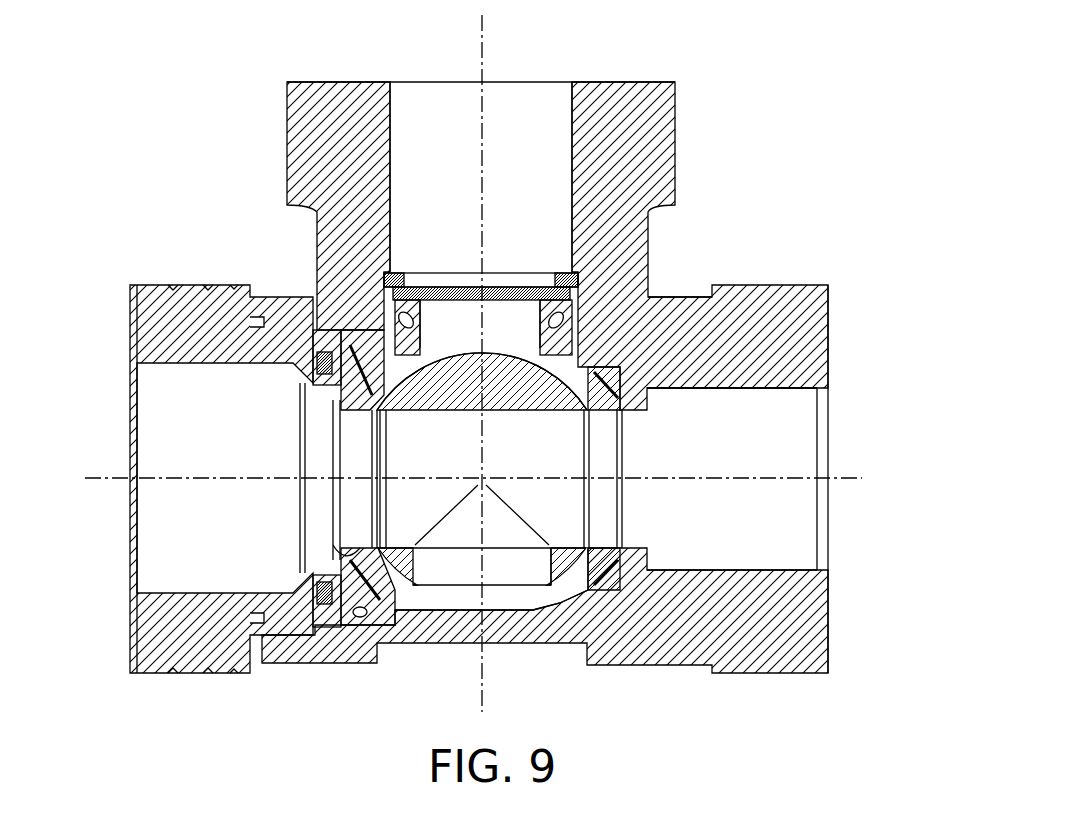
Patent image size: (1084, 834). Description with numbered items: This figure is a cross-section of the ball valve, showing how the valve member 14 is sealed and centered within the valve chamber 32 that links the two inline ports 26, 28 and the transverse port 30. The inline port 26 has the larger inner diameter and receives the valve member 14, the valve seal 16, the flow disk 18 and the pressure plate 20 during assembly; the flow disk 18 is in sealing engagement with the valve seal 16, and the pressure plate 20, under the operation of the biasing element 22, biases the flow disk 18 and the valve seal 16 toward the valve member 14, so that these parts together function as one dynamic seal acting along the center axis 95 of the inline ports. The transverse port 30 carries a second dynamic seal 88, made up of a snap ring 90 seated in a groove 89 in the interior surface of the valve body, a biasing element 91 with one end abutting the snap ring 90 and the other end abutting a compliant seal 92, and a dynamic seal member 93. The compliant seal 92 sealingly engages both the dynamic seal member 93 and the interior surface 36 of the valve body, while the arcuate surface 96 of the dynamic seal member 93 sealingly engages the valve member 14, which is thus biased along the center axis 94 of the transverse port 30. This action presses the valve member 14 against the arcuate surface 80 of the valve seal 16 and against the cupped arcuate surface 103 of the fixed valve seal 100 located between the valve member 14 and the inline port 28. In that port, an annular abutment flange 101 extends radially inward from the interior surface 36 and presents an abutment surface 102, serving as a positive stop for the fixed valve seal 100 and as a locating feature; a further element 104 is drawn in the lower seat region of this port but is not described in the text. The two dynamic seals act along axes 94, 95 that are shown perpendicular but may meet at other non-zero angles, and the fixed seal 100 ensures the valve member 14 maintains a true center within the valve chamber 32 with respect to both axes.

The valve member 14 is at (575, 592).
The valve seal 16 is at (400, 595).
The flow disk 18 is at (362, 620).
The pressure plate 20 is at (322, 330).
The biasing element 22 is at (300, 367).
The inline port 26 is at (175, 655).
The inline port 28 is at (818, 623).
The transverse port 30 is at (676, 130).
The valve chamber 32 is at (513, 606).
The interior surface 36 is at (805, 550).
The arcuate surface 80 is at (400, 540).
The dynamic seal 88 is at (372, 288).
The groove 89 is at (550, 300).
The snap ring 90 is at (584, 284).
The biasing element 91 is at (595, 292).
The compliant seal 92 is at (605, 298).
The dynamic seal member 93 is at (433, 320).
The center axis 94 is at (490, 44).
The center axis 95 is at (856, 468).
The arcuate surface 96 is at (428, 372).
The fixed valve seal 100 is at (718, 300).
The annular abutment flange 101 is at (660, 387).
The abutment surface 102 is at (612, 405).
The arcuate surface 103 is at (553, 545).
The lower downstream seat 104 is at (610, 550).